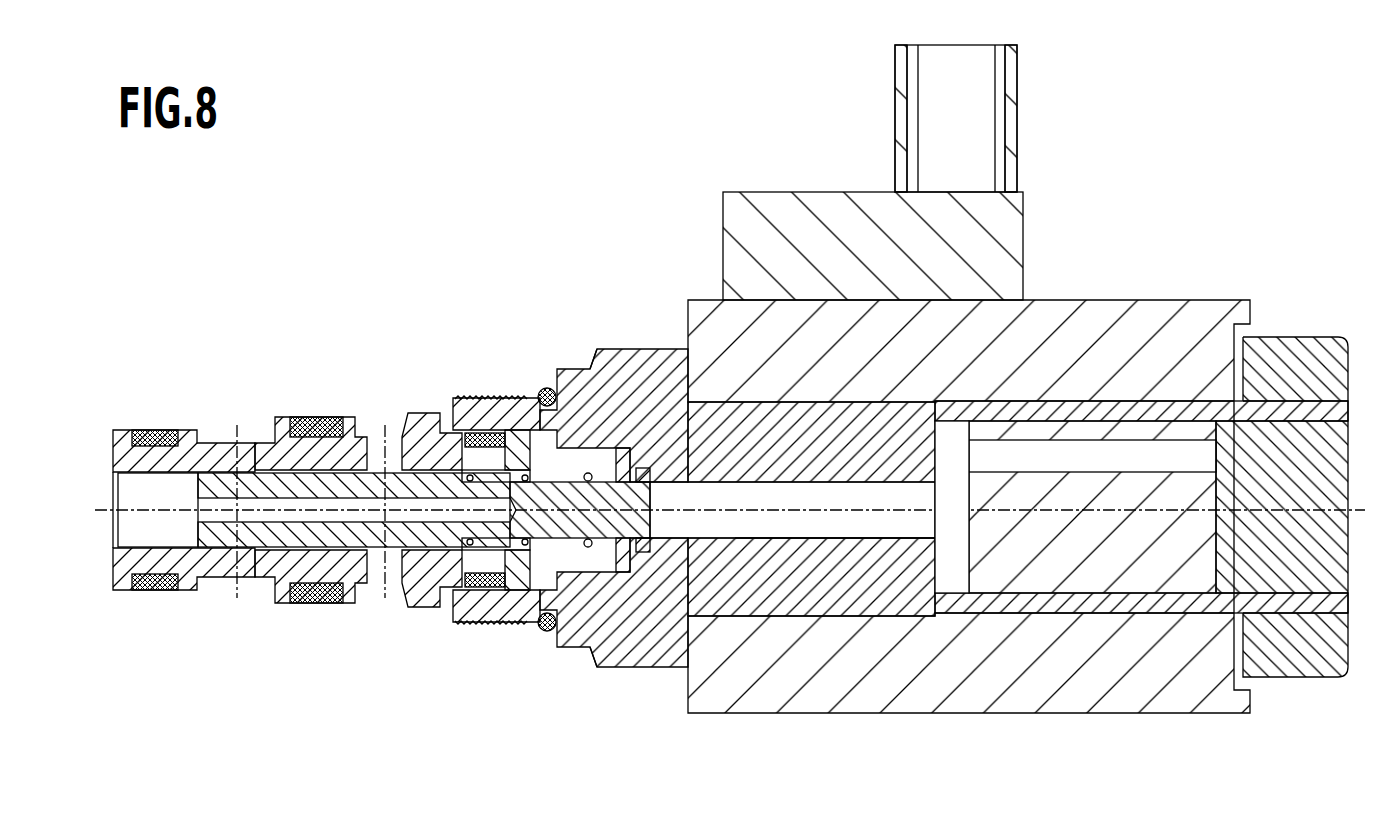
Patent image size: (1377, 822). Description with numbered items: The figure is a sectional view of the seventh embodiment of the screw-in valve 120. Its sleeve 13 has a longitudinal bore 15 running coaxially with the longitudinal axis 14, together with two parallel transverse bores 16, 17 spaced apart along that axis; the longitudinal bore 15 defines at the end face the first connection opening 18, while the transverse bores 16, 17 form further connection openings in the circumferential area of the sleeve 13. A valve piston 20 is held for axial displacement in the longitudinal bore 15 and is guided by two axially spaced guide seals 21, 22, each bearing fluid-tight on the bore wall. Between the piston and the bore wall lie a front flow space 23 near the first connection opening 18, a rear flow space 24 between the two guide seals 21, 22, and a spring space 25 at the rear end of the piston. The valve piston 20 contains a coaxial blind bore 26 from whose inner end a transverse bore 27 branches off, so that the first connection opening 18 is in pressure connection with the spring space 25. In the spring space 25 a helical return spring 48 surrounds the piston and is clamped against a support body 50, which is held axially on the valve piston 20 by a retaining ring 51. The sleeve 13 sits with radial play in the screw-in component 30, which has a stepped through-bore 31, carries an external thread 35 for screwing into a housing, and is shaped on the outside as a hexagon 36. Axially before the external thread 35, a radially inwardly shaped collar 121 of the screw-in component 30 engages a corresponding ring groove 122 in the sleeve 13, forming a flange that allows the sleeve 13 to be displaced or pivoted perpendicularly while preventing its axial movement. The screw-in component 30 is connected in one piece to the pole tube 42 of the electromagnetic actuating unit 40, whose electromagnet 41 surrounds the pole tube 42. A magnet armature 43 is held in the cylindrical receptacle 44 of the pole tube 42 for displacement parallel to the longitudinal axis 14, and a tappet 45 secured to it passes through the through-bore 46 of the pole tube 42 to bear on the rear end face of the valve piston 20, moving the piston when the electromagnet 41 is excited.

The sleeve 13 is at (338, 415).
The longitudinal axis 14 is at (122, 511).
The longitudinal bore 15 is at (122, 543).
The transverse bore 16 is at (225, 556).
The transverse bore 17 is at (335, 590).
The first connection opening 18 is at (122, 490).
The valve piston 20 is at (292, 543).
The first guide seal 21 is at (243, 476).
The second guide seal 22 is at (345, 438).
The front flow space 23 is at (178, 580).
The rear flow space 24 is at (303, 560).
The spring space 25 is at (500, 590).
The blind bore 26 is at (200, 503).
The transverse bore 27 is at (502, 434).
The screw-in component 30 is at (583, 366).
The stepped through-bore 31 is at (445, 598).
The external thread 35 is at (522, 430).
The hexagon 36 is at (603, 348).
The electromagnetic actuating unit 40 is at (1065, 297).
The electromagnet 41 is at (1195, 322).
The pole tube 42 is at (1038, 402).
The magnet armature 43 is at (1105, 548).
The cylindrical receptacle 44 is at (965, 585).
The tappet 45 is at (780, 526).
The through-bore 46 is at (880, 520).
The helical return spring 48 is at (478, 470).
The support body 50 is at (655, 478).
The retaining ring 51 is at (655, 541).
The screw-in valve 120 is at (1066, 169).
The collar 121 is at (425, 432).
The ring groove 122 is at (405, 608).